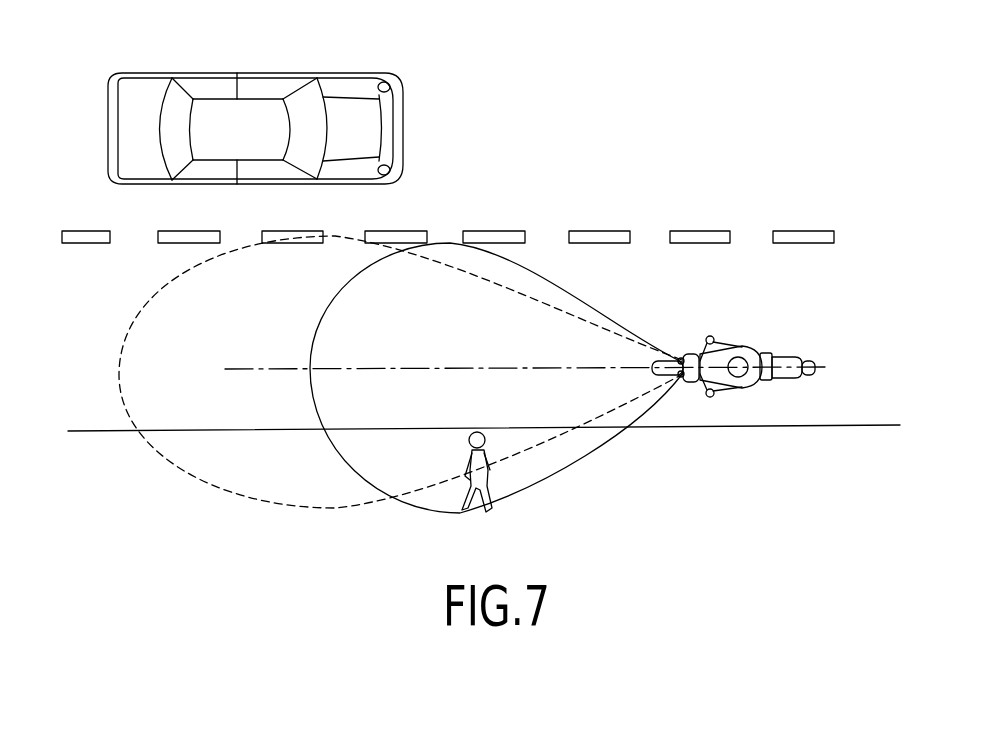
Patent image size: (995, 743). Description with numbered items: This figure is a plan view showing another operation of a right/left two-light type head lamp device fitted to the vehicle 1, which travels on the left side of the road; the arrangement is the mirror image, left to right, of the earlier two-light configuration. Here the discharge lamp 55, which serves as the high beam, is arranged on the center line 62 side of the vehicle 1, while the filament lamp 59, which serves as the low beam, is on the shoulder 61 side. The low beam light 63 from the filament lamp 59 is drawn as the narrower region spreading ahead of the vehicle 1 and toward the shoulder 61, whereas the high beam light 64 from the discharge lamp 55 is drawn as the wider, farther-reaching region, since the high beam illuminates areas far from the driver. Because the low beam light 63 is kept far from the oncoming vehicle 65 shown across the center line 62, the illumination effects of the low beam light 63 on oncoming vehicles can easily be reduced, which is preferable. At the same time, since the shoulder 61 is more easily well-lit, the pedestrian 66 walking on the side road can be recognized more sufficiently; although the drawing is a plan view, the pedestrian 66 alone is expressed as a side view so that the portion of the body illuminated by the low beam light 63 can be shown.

The vehicle 1 is at (746, 404).
The discharge lamp 55 is at (680, 358).
The filament lamp 59 is at (681, 378).
The shoulder 61 is at (546, 428).
The center line 62 is at (590, 231).
The low beam light 63 is at (448, 231).
The high beam light 64 is at (118, 373).
The oncoming vehicle 65 is at (263, 73).
The pedestrian 66 is at (463, 500).